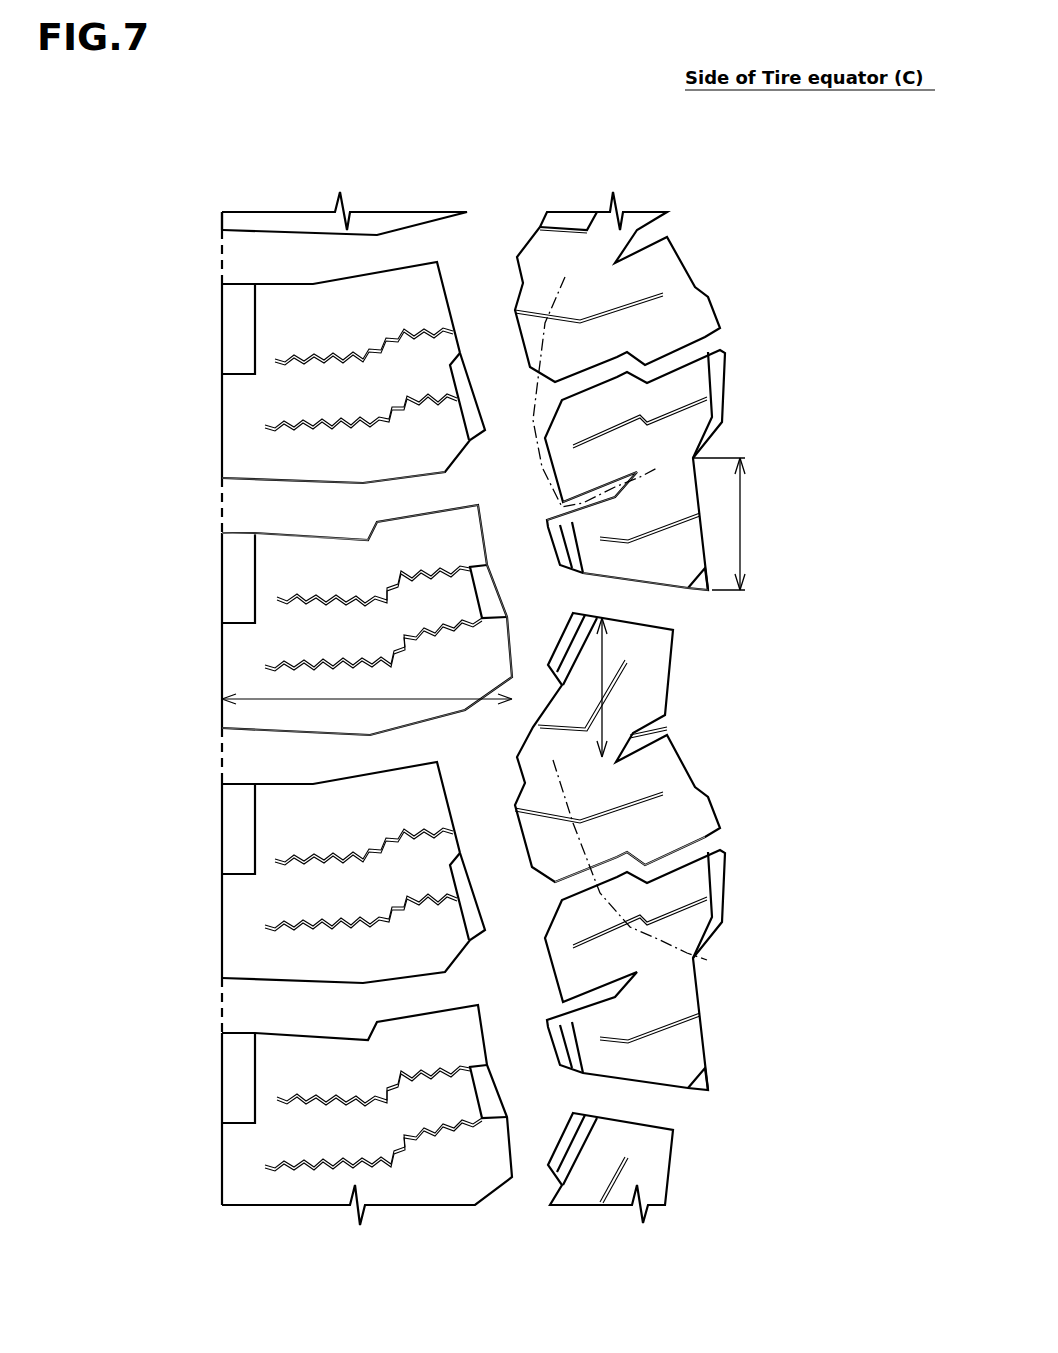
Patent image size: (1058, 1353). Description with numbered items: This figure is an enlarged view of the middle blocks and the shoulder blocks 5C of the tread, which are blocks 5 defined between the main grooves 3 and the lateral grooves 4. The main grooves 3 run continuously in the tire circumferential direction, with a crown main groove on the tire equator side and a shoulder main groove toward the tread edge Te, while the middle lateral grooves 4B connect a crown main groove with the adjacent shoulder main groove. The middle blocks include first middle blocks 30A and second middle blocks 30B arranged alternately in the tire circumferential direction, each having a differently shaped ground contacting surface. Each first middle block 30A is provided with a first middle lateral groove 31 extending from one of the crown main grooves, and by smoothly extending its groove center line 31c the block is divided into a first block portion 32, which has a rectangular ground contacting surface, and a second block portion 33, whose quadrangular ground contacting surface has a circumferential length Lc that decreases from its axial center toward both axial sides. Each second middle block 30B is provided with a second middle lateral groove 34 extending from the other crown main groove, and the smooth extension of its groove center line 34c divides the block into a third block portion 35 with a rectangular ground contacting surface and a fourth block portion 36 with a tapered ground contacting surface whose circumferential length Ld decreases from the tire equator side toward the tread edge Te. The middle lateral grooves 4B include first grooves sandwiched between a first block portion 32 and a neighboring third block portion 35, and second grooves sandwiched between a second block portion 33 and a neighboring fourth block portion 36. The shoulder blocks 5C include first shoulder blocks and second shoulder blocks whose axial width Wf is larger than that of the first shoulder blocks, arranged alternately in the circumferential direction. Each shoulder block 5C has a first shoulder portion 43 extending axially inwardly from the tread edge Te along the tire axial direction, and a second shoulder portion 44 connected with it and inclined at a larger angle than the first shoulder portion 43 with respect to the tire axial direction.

The tread edge Te is at (222, 235).
The main groove 3 is at (488, 260).
The groove center line of the second middle lateral groove 34c is at (565, 277).
The second middle lateral groove 34 is at (607, 490).
The second middle block 30B is at (682, 390).
The third block portion 35 is at (648, 447).
The length in the tire circumferential direction Ld is at (736, 524).
The fourth block portion 36 is at (643, 558).
The length in the tire circumferential direction Lc is at (607, 653).
The first middle block 30A is at (633, 685).
The first middle lateral groove 31 is at (668, 731).
The first block portion 32 is at (653, 768).
The second block portion 33 is at (662, 838).
The middle lateral groove 4B is at (594, 587).
The groove center line of the first middle lateral groove 31c is at (707, 960).
The block 5 is at (615, 1053).
The lateral groove 4 is at (295, 518).
The shoulder block 5C is at (133, 558).
The second shoulder portion 44 is at (402, 557).
The first shoulder portion 43 is at (290, 630).
The width in the tire axial direction Wf is at (300, 702).